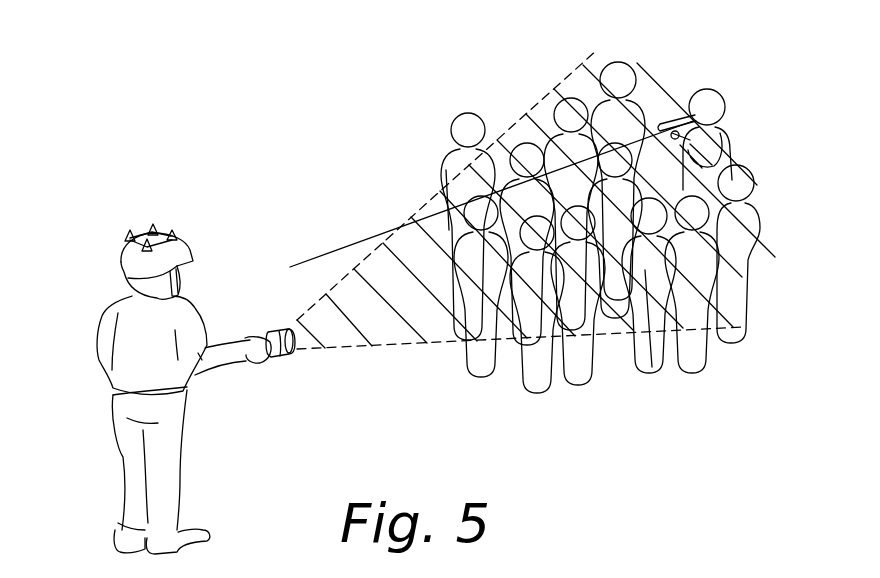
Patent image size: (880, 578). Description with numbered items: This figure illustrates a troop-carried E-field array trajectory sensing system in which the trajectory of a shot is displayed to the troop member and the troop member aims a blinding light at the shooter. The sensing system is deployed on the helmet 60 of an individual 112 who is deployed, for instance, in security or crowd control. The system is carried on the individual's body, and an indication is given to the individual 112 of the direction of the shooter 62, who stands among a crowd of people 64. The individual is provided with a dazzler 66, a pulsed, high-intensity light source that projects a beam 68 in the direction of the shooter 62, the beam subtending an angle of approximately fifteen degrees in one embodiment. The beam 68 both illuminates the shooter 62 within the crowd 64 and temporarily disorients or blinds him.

The helmet 60 is at (124, 256).
The shooter 62 is at (724, 130).
The crowd of people 64 is at (440, 163).
The dazzler 66 is at (290, 357).
The beam 68 is at (688, 79).
The individual 112 is at (180, 413).